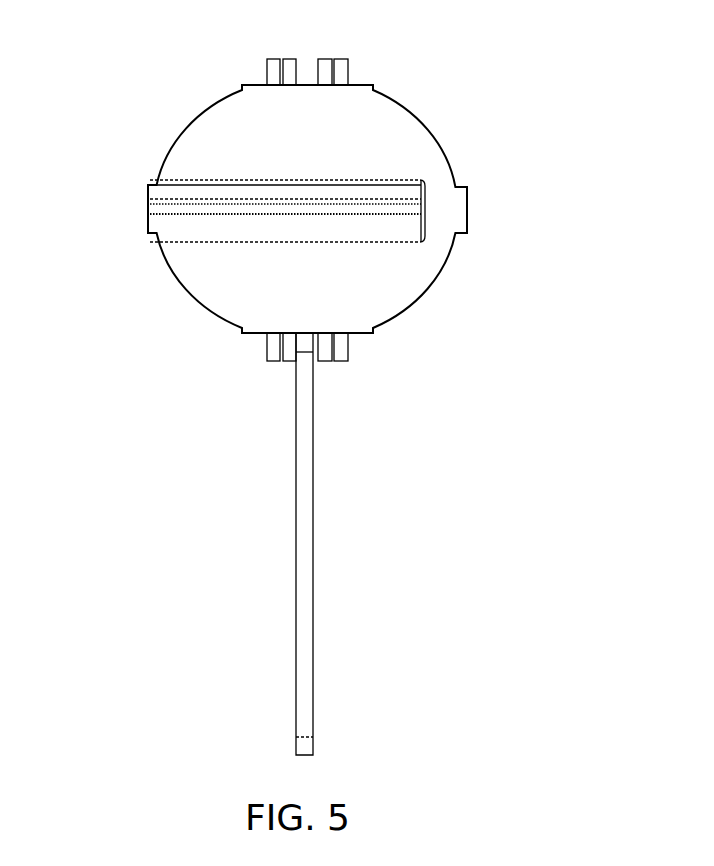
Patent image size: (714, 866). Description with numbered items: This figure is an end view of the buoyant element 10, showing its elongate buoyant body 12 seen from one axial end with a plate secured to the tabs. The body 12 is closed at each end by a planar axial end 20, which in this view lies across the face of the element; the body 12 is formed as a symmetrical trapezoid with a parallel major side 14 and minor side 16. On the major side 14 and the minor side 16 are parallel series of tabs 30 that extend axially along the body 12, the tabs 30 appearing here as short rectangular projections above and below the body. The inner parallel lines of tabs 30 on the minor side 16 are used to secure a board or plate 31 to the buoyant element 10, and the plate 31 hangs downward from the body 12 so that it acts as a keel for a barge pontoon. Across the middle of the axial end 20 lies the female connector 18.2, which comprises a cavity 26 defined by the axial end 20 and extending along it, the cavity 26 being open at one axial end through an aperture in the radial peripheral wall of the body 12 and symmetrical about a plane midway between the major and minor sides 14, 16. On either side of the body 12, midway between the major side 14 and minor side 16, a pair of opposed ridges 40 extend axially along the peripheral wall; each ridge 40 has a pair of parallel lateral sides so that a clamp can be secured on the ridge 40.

The buoyant element 10 is at (467, 77).
The buoyant body 12 is at (367, 273).
The major side 14 is at (362, 83).
The minor side 16 is at (360, 335).
The female connector 18.2 is at (177, 223).
The planar axial end 20 is at (412, 167).
The cavity 26 is at (227, 220).
The tabs 30 is at (273, 60).
The plates 31 is at (307, 581).
The ridge 40 is at (148, 207).